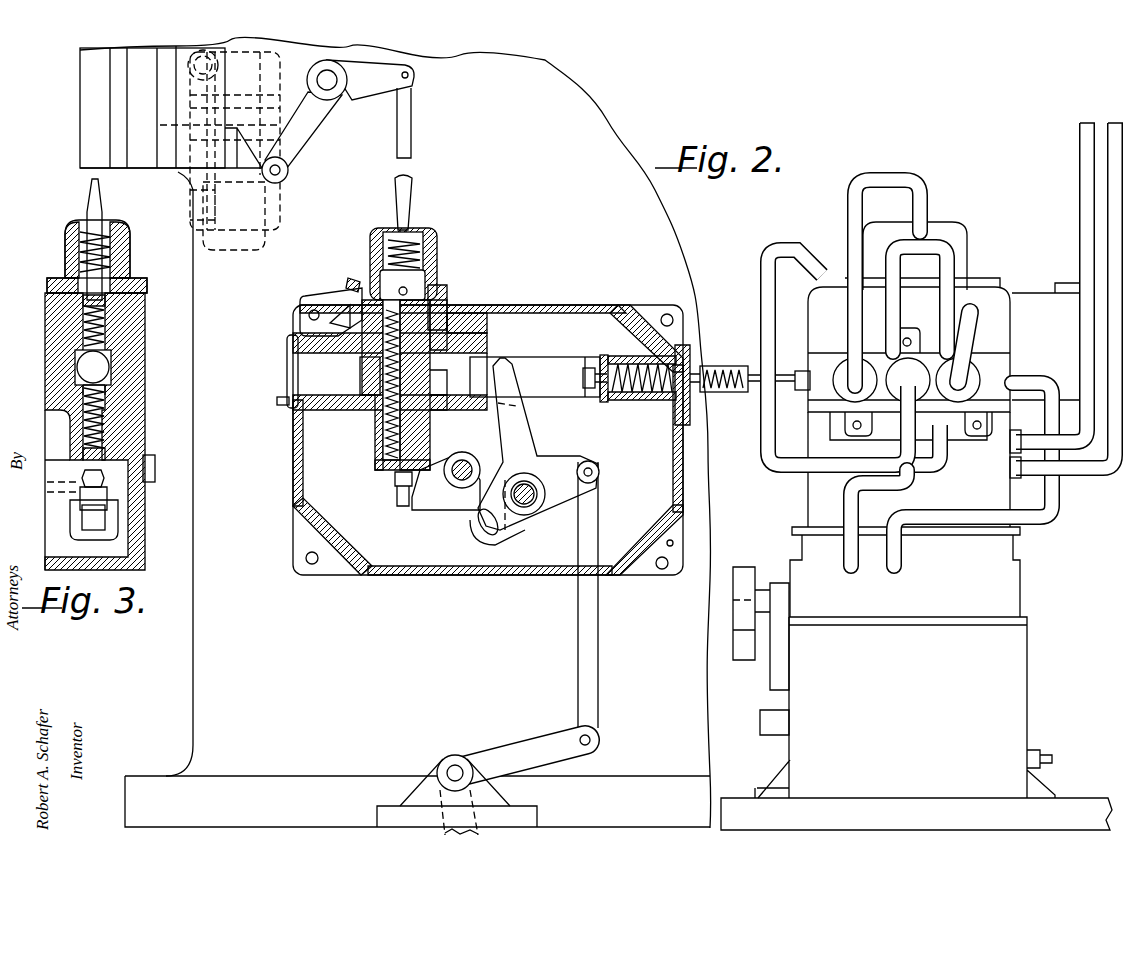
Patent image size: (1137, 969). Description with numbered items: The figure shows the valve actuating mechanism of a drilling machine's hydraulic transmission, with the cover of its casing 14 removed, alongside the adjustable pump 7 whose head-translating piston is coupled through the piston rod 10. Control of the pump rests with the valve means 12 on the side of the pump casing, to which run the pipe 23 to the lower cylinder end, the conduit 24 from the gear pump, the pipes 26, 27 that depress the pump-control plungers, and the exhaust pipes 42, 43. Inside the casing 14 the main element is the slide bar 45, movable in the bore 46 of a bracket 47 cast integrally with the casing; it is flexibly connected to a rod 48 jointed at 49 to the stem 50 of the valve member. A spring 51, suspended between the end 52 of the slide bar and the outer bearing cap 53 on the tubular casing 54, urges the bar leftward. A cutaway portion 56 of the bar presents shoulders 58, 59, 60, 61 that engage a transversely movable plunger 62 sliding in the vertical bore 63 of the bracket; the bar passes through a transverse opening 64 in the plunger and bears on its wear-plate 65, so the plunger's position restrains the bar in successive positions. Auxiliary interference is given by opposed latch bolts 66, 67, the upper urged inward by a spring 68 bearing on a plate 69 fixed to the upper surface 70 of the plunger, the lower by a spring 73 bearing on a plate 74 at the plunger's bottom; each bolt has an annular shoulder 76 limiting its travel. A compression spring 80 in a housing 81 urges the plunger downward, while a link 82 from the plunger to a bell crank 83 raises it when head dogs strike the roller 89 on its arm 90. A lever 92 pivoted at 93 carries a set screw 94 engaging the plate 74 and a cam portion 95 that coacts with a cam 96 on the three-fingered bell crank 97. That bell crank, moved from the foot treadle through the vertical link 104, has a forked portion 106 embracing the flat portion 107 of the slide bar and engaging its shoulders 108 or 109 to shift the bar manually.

In FIG. 2, the pump 7 is at (1010, 552).
In FIG. 2, the piston rod 10 is at (268, 44).
In FIG. 2, the valve means 12 is at (975, 352).
In FIG. 2, the casing 14 is at (555, 305).
In FIG. 2, the pipe 23 is at (1080, 190).
In FIG. 2, the conduit 24 is at (845, 514).
In FIG. 2, the pipe 26 is at (956, 276).
In FIG. 2, the pipe 27 is at (762, 295).
In FIG. 2, the pipe 42 is at (1052, 440).
In FIG. 2, the pipe 43 is at (845, 214).
In FIG. 2, the slide bar 45 is at (553, 375).
In FIG. 2, the bore 46 is at (330, 408).
In FIG. 2, the bracket 47 is at (452, 335).
In FIG. 2, the rod 48 is at (605, 365).
In FIG. 2, the joint 49 is at (750, 372).
In FIG. 2, the stem 50 is at (780, 378).
In FIG. 2, the spring 51 is at (645, 398).
In FIG. 2, the end of slide bar 52 is at (614, 366).
In FIG. 2, the outer bearing cap 53 is at (708, 366).
In FIG. 2, the tubular casing 54 is at (720, 395).
In FIG. 2, the cutaway portion 56 is at (362, 368).
In FIG. 2, the shoulder 58 is at (466, 345).
In FIG. 2, the shoulder 59 is at (455, 407).
In FIG. 2, the shoulder 60 is at (432, 380).
In FIG. 2, the shoulder 61 is at (432, 420).
In FIG. 2, the plunger 62 is at (380, 455).
In FIG. 2, the vertical bore 63 is at (445, 300).
In FIG. 3, the transverse opening 64 is at (106, 396).
In FIG. 2, the wear-plate 65 is at (437, 300).
In FIG. 3, the latch bolt 66 is at (78, 366).
In FIG. 3, the latch bolt 67 is at (82, 390).
In FIG. 2, the spring 68 is at (358, 284).
In FIG. 2, the plate 69 is at (383, 290).
In FIG. 2, the upper surface 70 is at (403, 285).
In FIG. 3, the spring 73 is at (106, 426).
In FIG. 2, the plate 74 is at (395, 488).
In FIG. 3, the plate 74 is at (103, 480).
In FIG. 3, the annular shoulder 76 is at (112, 312).
In FIG. 2, the compression spring 80 is at (409, 225).
In FIG. 2, the housing 81 is at (386, 230).
In FIG. 2, the link 82 is at (412, 112).
In FIG. 2, the bell crank 83 is at (385, 100).
In FIG. 2, the roller 89 is at (288, 172).
In FIG. 2, the arm 90 is at (320, 120).
In FIG. 2, the lever 92 is at (445, 512).
In FIG. 2, the pivot 93 is at (468, 465).
In FIG. 2, the set screw 94 is at (400, 490).
In FIG. 2, the cam portion 95 is at (478, 522).
In FIG. 2, the cam 96 is at (500, 545).
In FIG. 2, the three-fingered bell crank 97 is at (535, 440).
In FIG. 2, the vertical link 104 is at (598, 630).
In FIG. 2, the forked portion 106 is at (508, 380).
In FIG. 2, the flat portion 107 is at (527, 398).
In FIG. 2, the shoulder 108 is at (590, 370).
In FIG. 2, the shoulder 109 is at (500, 362).